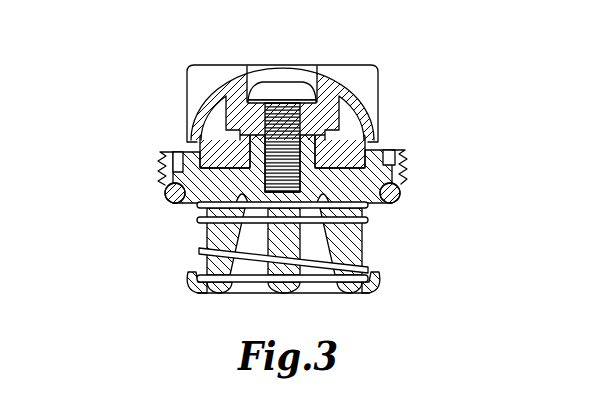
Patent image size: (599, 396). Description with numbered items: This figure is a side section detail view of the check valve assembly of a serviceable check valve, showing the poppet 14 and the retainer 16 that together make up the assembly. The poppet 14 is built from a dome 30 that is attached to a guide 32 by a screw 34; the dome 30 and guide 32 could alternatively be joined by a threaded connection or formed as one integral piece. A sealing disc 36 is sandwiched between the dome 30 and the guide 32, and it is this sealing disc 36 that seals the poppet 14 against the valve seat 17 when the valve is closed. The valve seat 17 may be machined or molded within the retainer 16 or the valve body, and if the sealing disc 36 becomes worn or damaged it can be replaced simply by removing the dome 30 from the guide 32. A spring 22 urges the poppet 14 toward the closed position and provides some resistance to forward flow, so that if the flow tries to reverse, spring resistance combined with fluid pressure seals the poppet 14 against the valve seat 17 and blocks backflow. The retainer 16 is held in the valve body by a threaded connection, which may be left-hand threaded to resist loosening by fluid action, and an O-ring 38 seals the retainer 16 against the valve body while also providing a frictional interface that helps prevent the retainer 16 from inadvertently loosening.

The poppet 14 is at (393, 72).
The retainer 16 is at (398, 167).
The valve seat 17 is at (365, 162).
The spring 22 is at (197, 252).
The dome 30 is at (205, 92).
The guide 32 is at (370, 245).
The screw 34 is at (302, 83).
The sealing disc 36 is at (352, 149).
The O-ring 38 is at (166, 196).